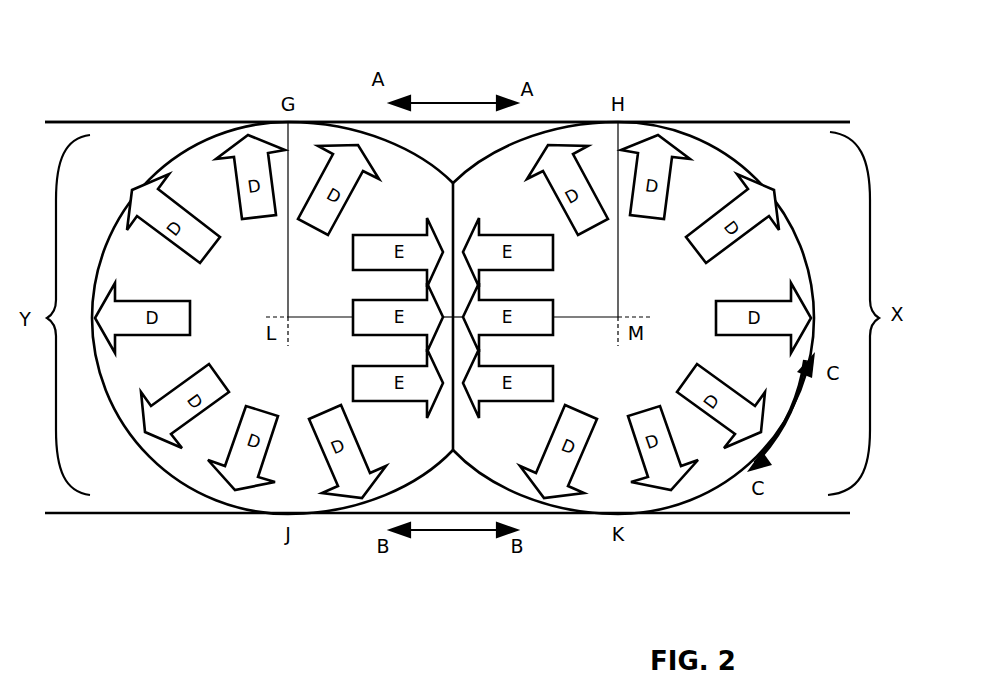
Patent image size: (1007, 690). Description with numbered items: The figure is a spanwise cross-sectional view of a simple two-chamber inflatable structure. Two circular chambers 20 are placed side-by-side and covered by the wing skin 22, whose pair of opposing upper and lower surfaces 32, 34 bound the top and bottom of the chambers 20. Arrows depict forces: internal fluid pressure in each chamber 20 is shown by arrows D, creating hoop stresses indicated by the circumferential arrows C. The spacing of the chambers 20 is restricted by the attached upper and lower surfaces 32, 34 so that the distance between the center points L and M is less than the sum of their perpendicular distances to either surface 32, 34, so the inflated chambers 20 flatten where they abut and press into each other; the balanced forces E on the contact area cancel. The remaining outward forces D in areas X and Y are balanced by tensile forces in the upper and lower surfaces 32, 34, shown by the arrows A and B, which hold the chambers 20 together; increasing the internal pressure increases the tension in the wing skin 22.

The chambers 20 is at (122, 432).
The wing skin 22 is at (697, 105).
The upper surface 32 is at (750, 121).
The lower surface 34 is at (702, 514).